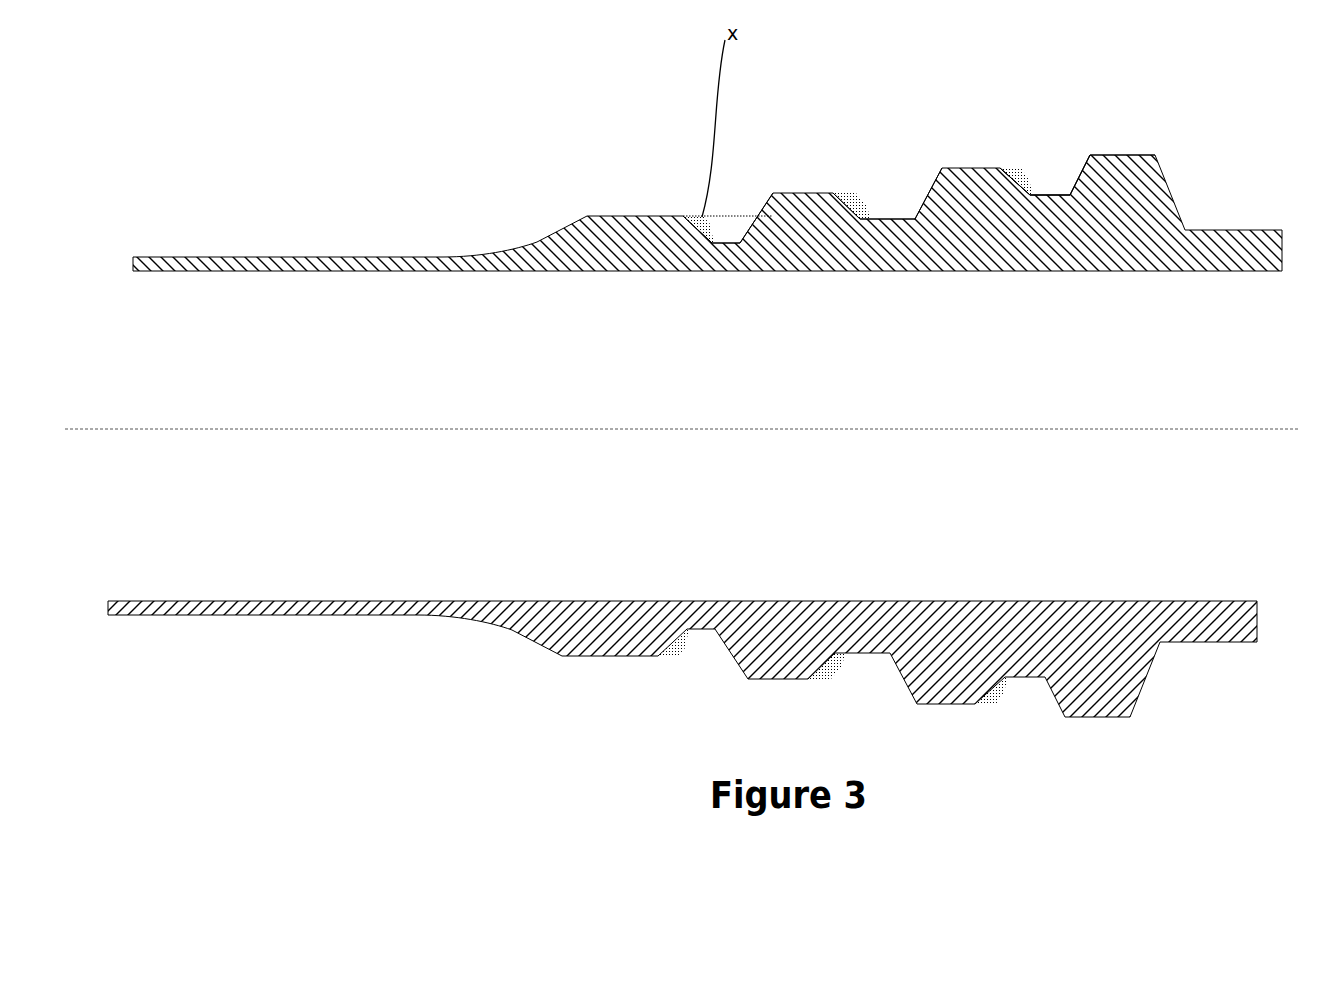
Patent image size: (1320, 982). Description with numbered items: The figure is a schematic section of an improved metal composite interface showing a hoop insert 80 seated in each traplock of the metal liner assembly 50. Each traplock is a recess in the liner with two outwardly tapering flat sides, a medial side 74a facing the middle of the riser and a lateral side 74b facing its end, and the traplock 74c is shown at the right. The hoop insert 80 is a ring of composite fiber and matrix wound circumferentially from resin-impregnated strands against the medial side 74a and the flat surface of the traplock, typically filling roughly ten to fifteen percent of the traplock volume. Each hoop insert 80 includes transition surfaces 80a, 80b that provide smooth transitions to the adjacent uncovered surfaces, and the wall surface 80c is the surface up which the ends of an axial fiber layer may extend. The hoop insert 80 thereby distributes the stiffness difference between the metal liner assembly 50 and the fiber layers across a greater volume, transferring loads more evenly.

The metal liner assembly 50 is at (549, 270).
The medial side 74a is at (732, 207).
The lateral side 74b is at (898, 197).
The traplock 74c is at (1051, 170).
The hoop insert 80 is at (692, 228).
The transition surface 80a is at (992, 168).
The transition surface 80b is at (1030, 197).
The wall surface 80c is at (1078, 178).